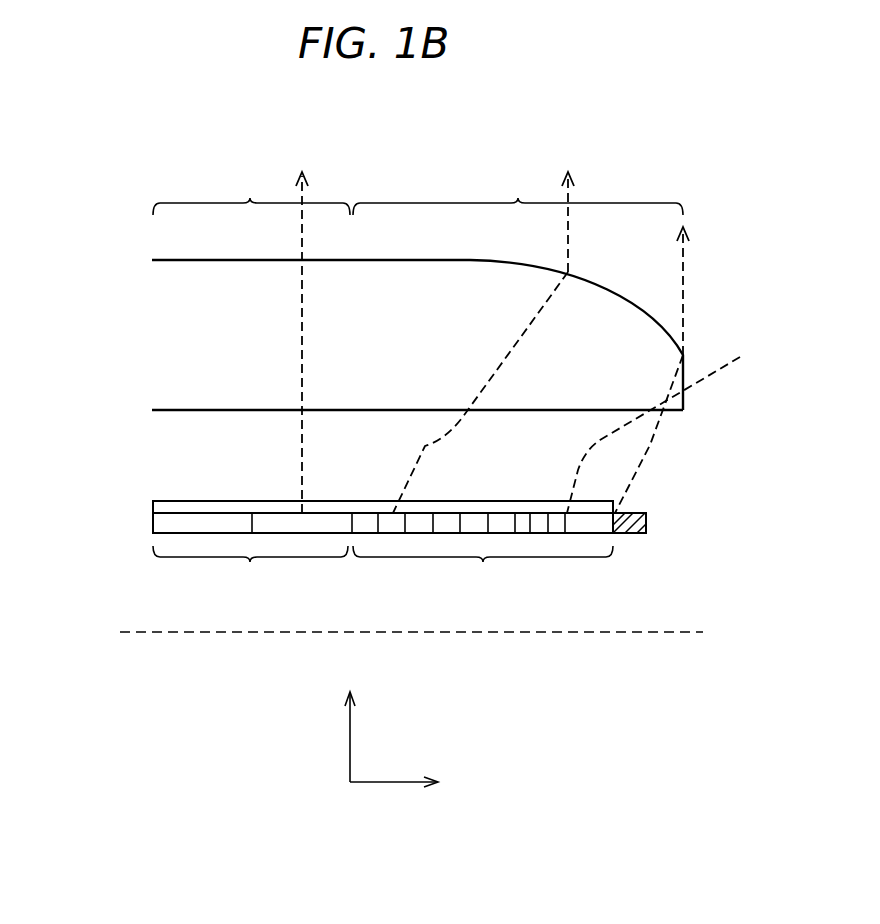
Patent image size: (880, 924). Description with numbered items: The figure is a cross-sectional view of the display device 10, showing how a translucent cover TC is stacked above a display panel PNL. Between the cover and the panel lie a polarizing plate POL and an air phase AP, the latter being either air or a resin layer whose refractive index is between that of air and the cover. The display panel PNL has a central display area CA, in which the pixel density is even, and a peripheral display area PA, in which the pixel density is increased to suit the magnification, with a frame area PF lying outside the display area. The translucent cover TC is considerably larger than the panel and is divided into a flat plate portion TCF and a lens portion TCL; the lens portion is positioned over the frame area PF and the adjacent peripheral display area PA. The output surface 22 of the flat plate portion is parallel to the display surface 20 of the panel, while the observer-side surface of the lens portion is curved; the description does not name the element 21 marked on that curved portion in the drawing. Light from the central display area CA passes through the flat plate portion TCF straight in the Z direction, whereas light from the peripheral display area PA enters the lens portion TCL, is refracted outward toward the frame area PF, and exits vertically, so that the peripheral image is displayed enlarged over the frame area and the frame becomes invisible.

The display device 10 is at (422, 136).
The display surface 20 is at (391, 502).
The curved portion of touch cover 21 is at (599, 290).
The output surface 22 is at (233, 258).
The translucent cover TC is at (417, 312).
The flat plate portion TCF is at (251, 192).
The lens portion TCL is at (518, 192).
The air phase AP is at (382, 455).
The polarizing plate POL is at (153, 506).
The display panel PNL is at (153, 525).
The frame area PF is at (646, 521).
The central display area CA is at (250, 569).
The peripheral display area PA is at (483, 569).